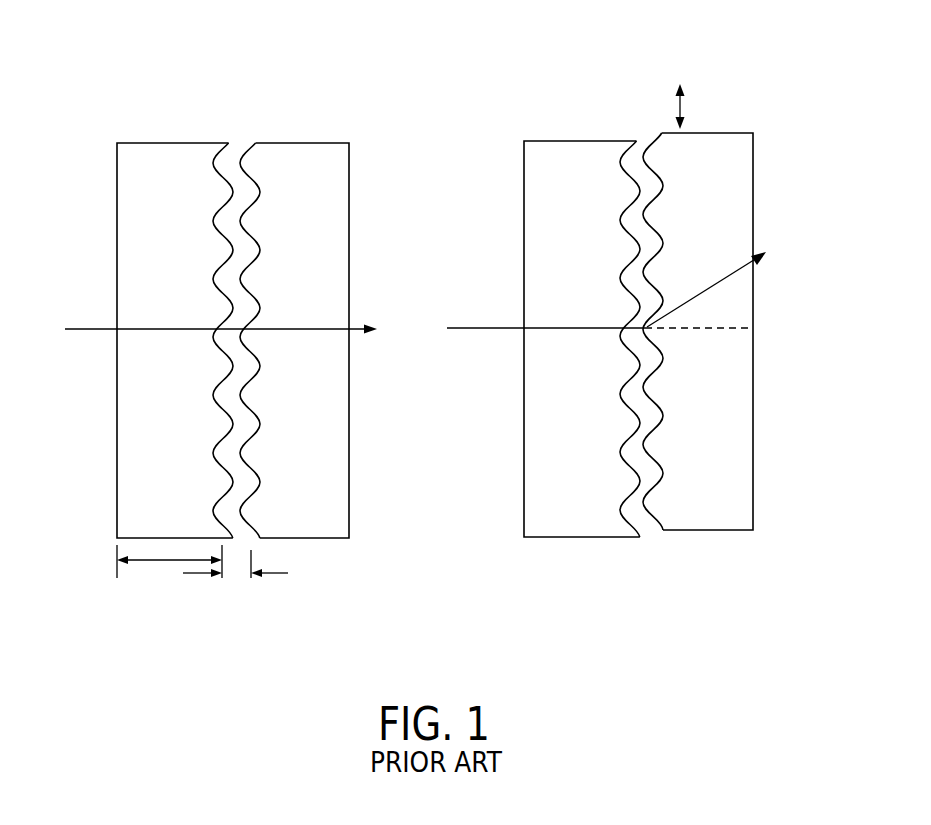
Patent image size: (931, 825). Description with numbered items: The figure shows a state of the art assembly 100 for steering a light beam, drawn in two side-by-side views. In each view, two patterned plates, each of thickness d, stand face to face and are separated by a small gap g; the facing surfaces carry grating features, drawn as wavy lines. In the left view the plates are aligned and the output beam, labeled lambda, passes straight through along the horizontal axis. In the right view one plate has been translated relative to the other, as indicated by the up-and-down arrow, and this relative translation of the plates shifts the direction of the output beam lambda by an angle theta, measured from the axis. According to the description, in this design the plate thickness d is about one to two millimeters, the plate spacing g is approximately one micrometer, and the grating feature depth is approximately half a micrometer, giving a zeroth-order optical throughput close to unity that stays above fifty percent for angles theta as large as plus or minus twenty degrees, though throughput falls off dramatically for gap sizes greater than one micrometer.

The state of the art assembly 100 is at (430, 339).